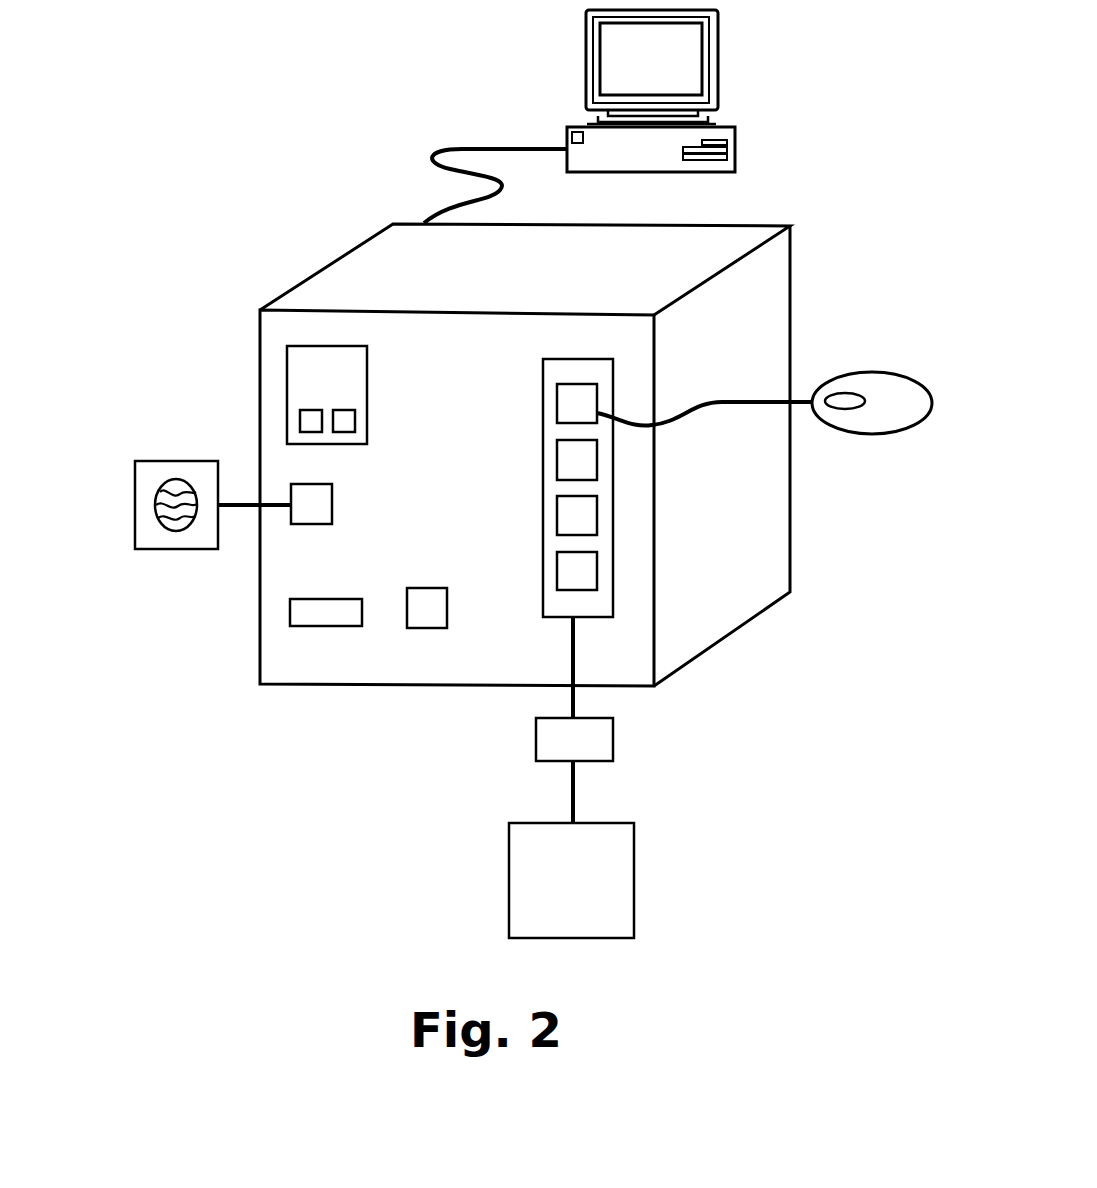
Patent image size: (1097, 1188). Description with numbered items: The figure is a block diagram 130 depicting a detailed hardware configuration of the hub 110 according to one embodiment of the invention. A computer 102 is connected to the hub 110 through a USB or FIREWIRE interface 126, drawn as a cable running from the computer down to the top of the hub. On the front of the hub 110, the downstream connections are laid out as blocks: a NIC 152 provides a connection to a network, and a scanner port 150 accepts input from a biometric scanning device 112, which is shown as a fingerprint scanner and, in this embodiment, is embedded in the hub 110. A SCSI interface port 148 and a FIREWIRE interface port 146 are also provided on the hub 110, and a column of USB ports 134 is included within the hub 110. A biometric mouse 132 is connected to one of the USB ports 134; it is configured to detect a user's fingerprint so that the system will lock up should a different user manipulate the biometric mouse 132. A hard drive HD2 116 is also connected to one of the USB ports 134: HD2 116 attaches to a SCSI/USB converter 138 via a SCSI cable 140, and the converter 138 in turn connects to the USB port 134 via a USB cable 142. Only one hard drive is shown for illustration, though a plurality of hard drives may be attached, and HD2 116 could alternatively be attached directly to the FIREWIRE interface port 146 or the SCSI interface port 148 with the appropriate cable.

The block diagram 130 is at (882, 105).
The computer 102 is at (735, 150).
The USB or FIREWIRE interface 126 is at (507, 147).
The hub 110 is at (756, 623).
The NIC 152 is at (287, 414).
The biometric scanning device 112 is at (132, 513).
The scanner port 150 is at (308, 524).
The SCSI interface port 148 is at (348, 626).
The FIREWIRE interface port 146 is at (436, 628).
The USB ports 134 is at (613, 394).
The biometric mouse 132 is at (857, 436).
The USB cable 142 is at (576, 657).
The SCSI/USB converter 138 is at (613, 740).
The SCSI cable 140 is at (575, 795).
The HD2 116 is at (634, 865).